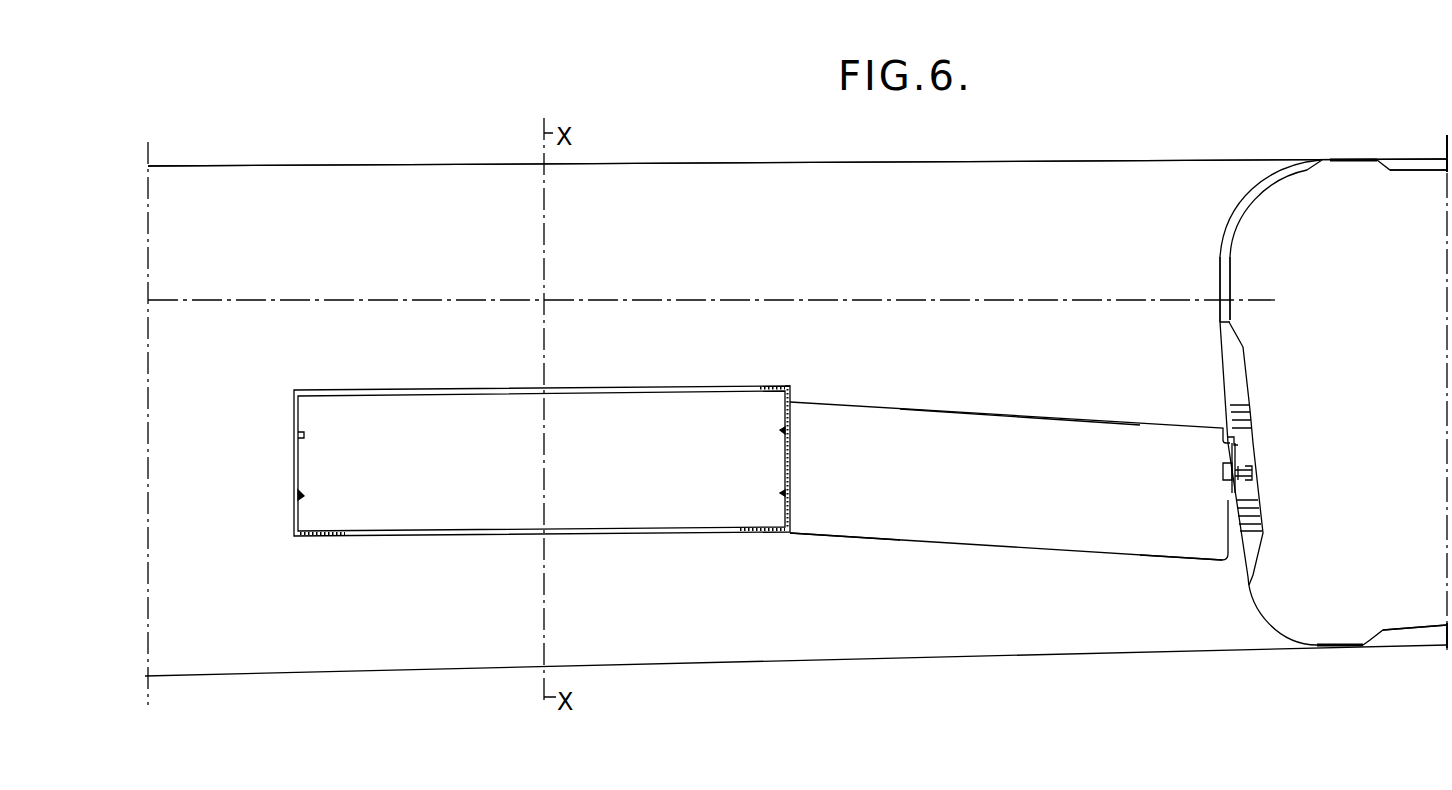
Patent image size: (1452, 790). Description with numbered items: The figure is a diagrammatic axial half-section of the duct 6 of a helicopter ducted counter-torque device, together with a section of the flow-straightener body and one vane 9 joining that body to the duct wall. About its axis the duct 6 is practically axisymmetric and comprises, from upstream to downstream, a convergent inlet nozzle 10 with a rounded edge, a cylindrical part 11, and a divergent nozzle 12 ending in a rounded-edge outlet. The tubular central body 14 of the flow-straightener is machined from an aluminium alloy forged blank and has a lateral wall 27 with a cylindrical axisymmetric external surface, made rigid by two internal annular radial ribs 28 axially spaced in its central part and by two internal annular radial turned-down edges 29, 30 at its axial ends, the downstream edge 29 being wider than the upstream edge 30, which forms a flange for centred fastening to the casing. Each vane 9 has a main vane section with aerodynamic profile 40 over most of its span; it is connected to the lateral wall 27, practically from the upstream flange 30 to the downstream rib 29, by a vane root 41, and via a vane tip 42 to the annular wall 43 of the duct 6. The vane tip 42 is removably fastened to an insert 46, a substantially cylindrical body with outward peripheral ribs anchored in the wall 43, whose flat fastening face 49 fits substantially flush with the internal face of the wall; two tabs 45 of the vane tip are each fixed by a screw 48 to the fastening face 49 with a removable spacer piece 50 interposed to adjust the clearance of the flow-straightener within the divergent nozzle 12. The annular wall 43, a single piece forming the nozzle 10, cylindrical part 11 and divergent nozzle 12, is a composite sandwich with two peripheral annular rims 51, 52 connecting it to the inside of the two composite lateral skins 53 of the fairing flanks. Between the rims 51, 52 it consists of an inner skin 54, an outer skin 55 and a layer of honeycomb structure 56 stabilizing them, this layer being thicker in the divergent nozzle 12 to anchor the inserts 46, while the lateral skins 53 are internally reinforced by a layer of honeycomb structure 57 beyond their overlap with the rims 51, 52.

The duct 6 is at (703, 190).
The vane 9 is at (1090, 423).
The convergent inlet nozzle 10 is at (1265, 177).
The cylindrical part 11 is at (1217, 253).
The divergent nozzle 12 is at (1252, 553).
The tubular central body 14 is at (793, 392).
The lateral wall 27 is at (790, 468).
The internal annular radial rib 28 is at (782, 493).
The downstream turned-down edge 29 is at (750, 532).
The upstream turned-down edge 30 is at (768, 390).
The main vane section with aerodynamic profile 40 is at (1028, 522).
The vane root 41 is at (810, 505).
The vane tip 42 is at (1217, 535).
The annular wall 43 is at (1252, 393).
The tab 45 is at (1228, 455).
The insert 46 is at (1255, 438).
The screw 48 is at (1223, 473).
The fastening face 49 is at (1252, 483).
The removable spacer piece 50 is at (1252, 467).
The peripheral annular rim 51 is at (1347, 167).
The peripheral annular rim 52 is at (1343, 643).
The composite lateral skin 53 is at (1375, 160).
The inner skin 54 is at (1223, 370).
The outer skin 55 is at (1247, 380).
The layer of honeycomb structure 56 is at (1235, 352).
The layer of honeycomb structure 57 is at (1415, 168).